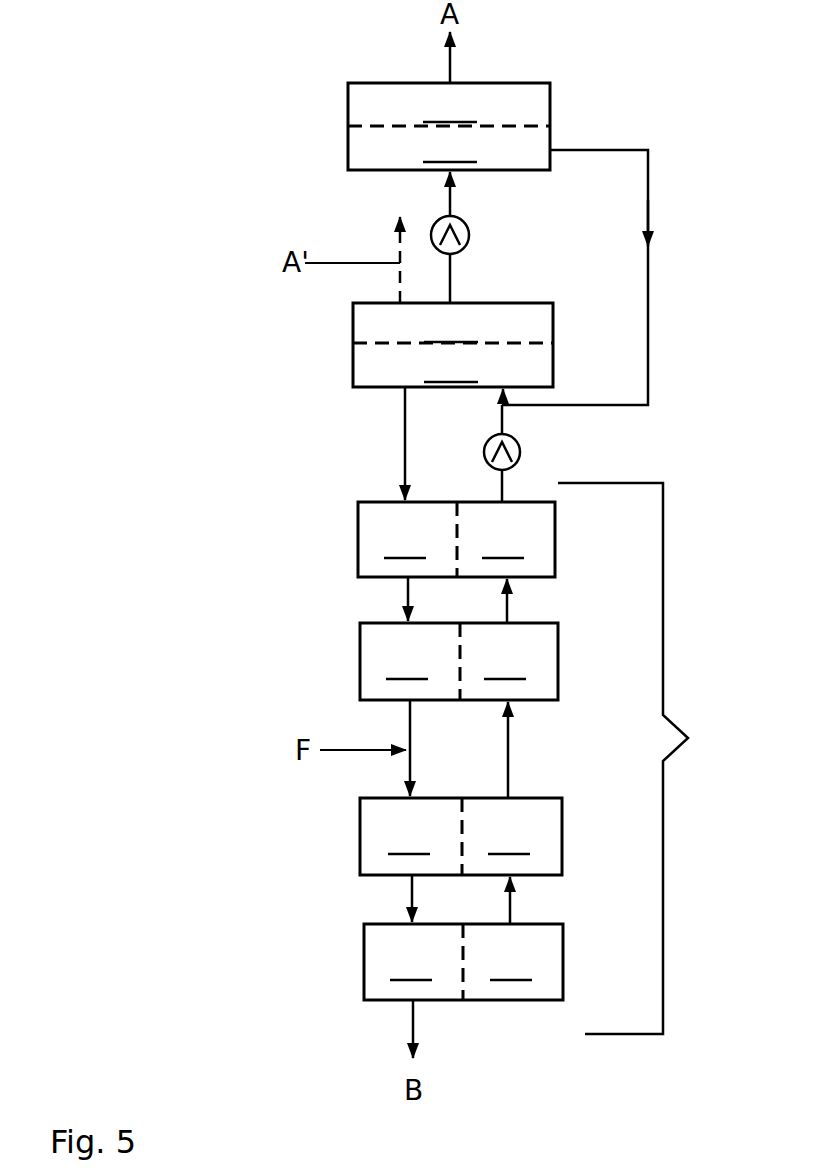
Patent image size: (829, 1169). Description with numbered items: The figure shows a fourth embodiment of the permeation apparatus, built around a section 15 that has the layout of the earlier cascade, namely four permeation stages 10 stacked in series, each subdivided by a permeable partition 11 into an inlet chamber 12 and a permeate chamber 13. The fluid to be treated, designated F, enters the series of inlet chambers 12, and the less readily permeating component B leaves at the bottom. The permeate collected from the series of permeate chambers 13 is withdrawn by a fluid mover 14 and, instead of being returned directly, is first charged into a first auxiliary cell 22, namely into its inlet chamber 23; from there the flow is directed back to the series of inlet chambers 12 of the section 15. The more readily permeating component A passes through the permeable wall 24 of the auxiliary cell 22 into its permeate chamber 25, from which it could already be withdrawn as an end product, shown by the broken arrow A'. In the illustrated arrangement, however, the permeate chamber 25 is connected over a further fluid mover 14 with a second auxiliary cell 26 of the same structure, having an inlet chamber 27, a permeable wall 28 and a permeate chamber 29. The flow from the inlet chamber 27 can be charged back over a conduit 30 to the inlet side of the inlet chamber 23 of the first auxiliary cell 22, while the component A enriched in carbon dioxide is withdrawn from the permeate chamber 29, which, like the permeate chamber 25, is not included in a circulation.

The permeation stage 10 is at (358, 540).
The permeable partition 11 is at (462, 660).
The inlet chamber 12 is at (408, 755).
The permeate chamber 13 is at (507, 755).
The fluid mover 14 is at (470, 231).
The section 15 is at (736, 754).
The first auxiliary cell 22 is at (353, 327).
The inlet chamber of first auxiliary cell 23 is at (451, 366).
The permeable wall of first auxiliary cell 24 is at (372, 345).
The permeate chamber of first auxiliary cell 25 is at (451, 326).
The second auxiliary cell 26 is at (348, 116).
The inlet chamber of second auxiliary cell 27 is at (450, 146).
The permeable wall of second auxiliary cell 28 is at (497, 125).
The permeate chamber of second auxiliary cell 29 is at (450, 106).
The conduit 30 is at (650, 280).